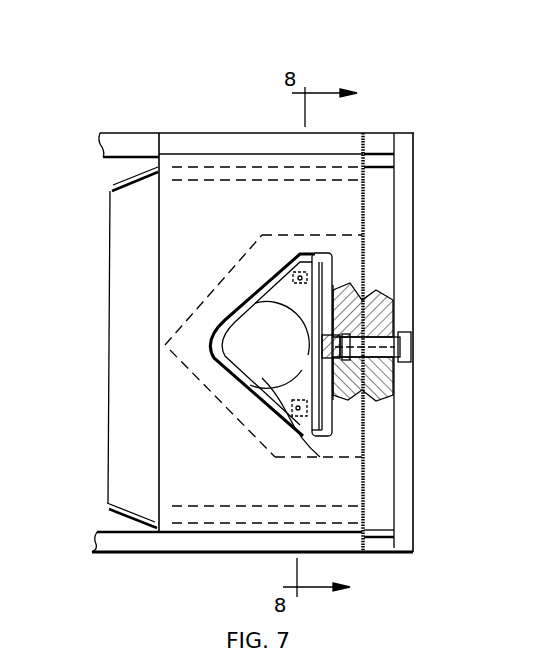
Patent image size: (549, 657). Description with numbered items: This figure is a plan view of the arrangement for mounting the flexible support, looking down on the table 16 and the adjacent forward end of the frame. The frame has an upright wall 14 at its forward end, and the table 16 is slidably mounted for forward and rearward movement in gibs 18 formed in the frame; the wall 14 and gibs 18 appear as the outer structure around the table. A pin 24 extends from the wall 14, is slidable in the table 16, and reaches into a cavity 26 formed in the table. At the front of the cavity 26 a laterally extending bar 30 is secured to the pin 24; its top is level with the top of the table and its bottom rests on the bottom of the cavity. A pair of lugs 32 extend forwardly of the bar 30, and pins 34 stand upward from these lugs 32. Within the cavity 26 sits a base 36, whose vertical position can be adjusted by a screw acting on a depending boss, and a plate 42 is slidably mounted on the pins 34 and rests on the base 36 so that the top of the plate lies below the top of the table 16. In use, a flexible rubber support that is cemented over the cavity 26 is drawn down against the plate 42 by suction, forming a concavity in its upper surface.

The upright wall 14 is at (405, 270).
The table 16 is at (345, 492).
The gibs 18 is at (127, 543).
The pin 24 is at (388, 342).
The cavity 26 is at (335, 458).
The laterally extending bar 30 is at (330, 278).
The lugs 32 is at (306, 408).
The pins 34 is at (318, 396).
The base 36 is at (227, 316).
The plate 42 is at (262, 378).